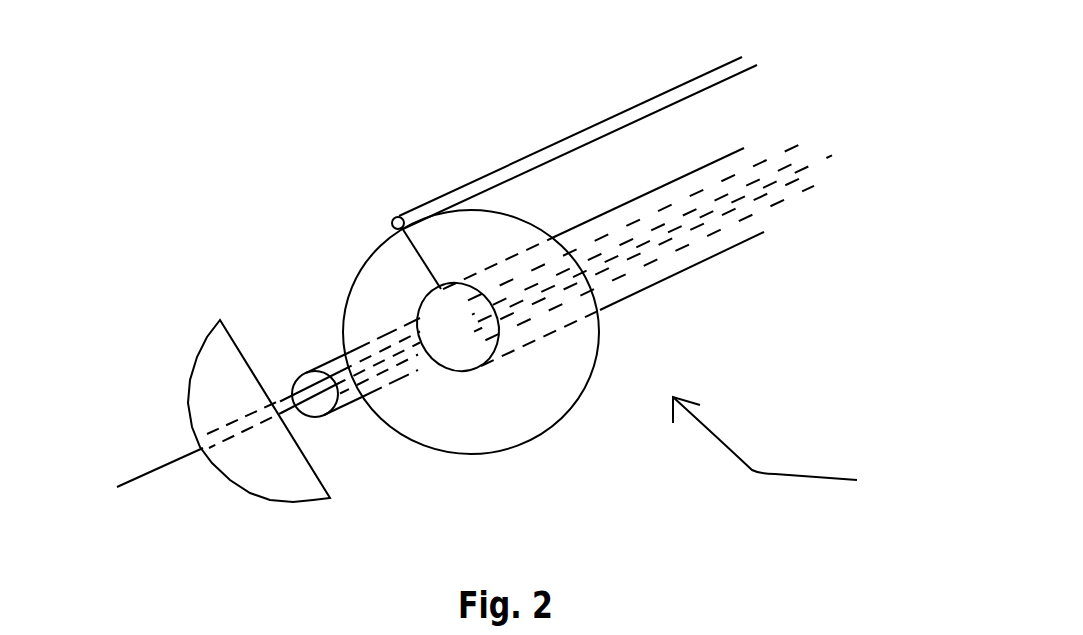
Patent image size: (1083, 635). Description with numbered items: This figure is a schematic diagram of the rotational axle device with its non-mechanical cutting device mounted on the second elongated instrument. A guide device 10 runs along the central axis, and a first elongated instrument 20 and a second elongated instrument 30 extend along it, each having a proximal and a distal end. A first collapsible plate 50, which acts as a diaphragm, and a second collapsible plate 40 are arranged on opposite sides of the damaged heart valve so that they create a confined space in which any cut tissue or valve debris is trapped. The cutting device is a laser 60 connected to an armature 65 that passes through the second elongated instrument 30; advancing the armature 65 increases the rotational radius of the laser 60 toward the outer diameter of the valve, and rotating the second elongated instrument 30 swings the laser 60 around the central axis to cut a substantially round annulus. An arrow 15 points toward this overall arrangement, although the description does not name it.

The guide device 10 is at (128, 482).
The fiber optic probe assembly 15 is at (784, 450).
The first elongated instrument 20 is at (338, 359).
The second elongated instrument 30 is at (750, 239).
The second collapsible plate 40 is at (212, 335).
The first collapsible plate 50 is at (560, 420).
The laser 60 is at (502, 167).
The armature 65 is at (396, 229).